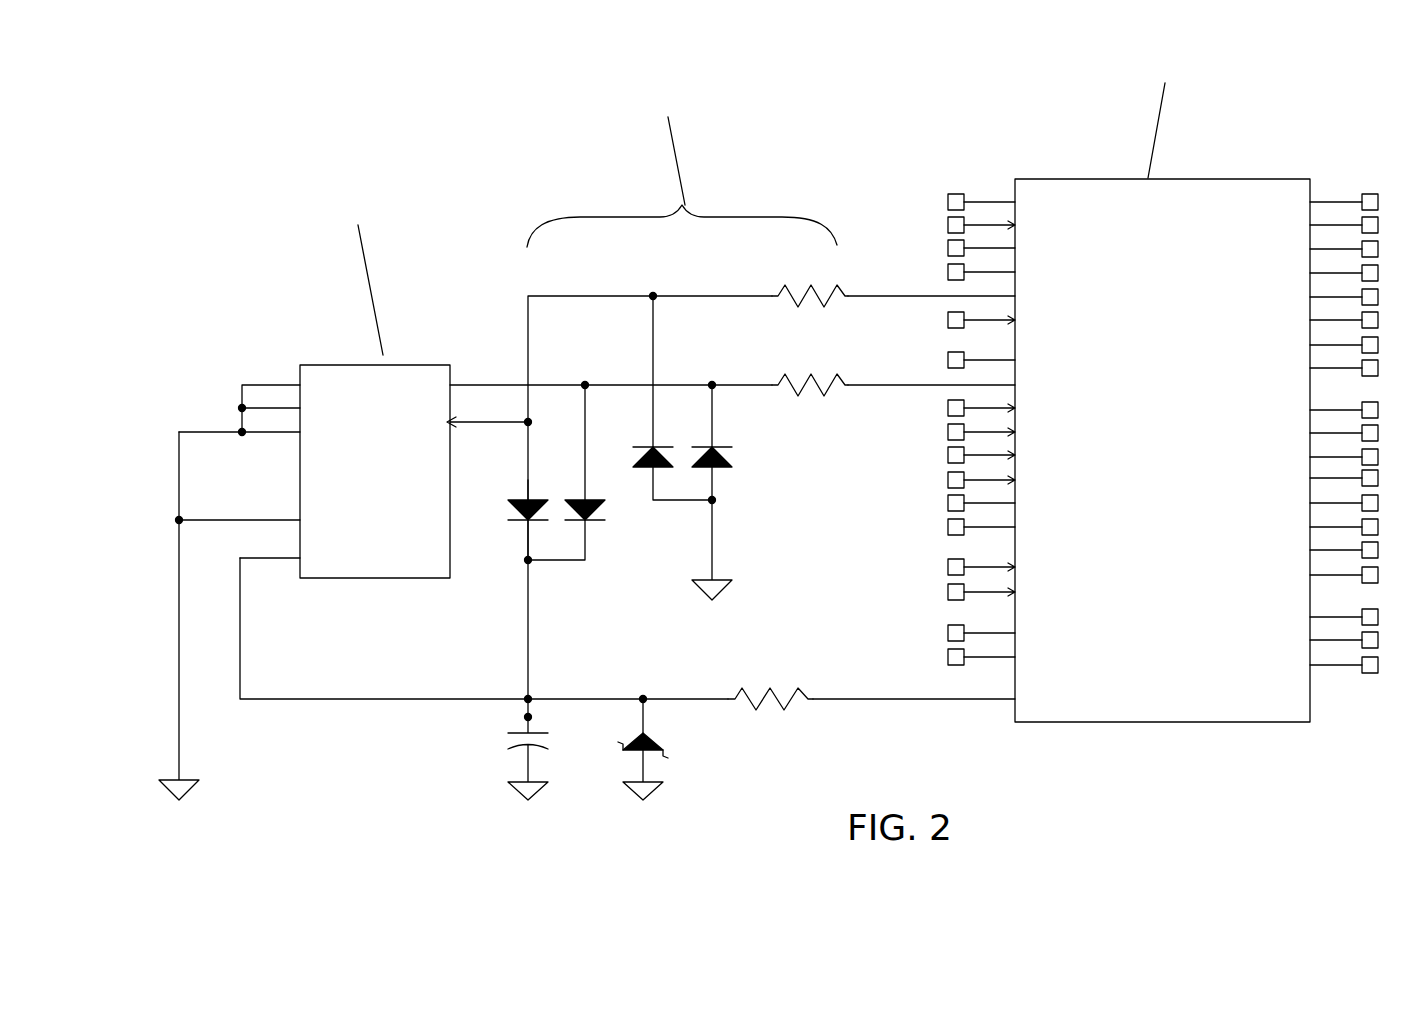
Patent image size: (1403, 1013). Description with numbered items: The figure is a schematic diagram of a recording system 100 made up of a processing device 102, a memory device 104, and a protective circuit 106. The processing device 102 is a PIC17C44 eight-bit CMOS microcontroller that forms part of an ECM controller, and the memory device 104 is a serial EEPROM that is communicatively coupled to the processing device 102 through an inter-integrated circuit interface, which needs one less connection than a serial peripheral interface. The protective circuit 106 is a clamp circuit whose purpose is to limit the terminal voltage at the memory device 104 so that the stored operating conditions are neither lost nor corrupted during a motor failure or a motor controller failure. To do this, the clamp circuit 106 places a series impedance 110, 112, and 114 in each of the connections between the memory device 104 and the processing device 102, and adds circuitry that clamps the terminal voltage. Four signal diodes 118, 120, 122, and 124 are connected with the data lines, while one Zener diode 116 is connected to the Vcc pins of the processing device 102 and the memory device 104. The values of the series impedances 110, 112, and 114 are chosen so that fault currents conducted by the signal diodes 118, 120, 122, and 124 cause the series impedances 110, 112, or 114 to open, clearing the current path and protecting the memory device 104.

The recording system 100 is at (913, 58).
The processing device 102 is at (1243, 178).
The memory device 104 is at (418, 365).
The protective circuit 106 is at (782, 197).
The series impedance 110 is at (852, 290).
The series impedance 112 is at (852, 380).
The series impedance 114 is at (797, 705).
The Zener diode 116 is at (655, 750).
The signal diode 118 is at (594, 512).
The signal diode 120 is at (642, 445).
The signal diode 122 is at (728, 456).
The signal diode 124 is at (538, 495).